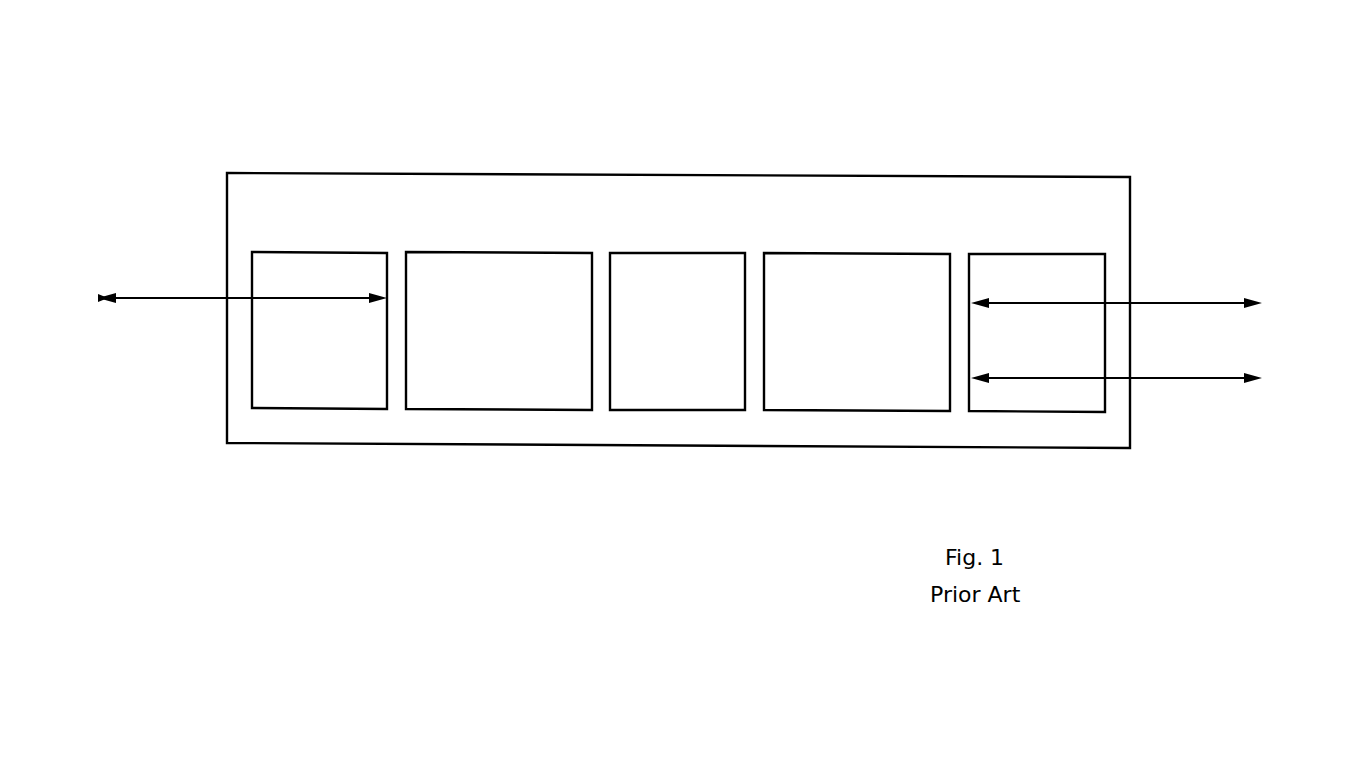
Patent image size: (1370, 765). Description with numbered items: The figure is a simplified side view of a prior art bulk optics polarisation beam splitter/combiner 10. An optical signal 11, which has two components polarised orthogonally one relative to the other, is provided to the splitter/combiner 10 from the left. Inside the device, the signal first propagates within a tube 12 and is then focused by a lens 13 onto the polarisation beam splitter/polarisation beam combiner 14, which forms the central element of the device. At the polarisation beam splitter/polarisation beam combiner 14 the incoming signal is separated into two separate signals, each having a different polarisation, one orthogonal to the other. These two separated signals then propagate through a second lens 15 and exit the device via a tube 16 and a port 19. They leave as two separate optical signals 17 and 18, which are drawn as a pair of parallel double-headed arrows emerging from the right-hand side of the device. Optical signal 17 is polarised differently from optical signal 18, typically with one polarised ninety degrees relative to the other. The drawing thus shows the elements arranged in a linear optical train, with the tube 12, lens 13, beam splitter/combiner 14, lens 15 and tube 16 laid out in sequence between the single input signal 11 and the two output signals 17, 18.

The splitter/combiner 10 is at (1064, 176).
The optical signal 11 is at (126, 298).
The tube 12 is at (348, 263).
The lens 13 is at (531, 265).
The polarisation beam splitter/polarisation beam combiner 14 is at (733, 265).
The lens 15 is at (917, 265).
The tube 16 is at (1082, 265).
The optical signal 17 is at (1223, 305).
The optical signal 18 is at (1223, 380).
The port 19 is at (1106, 268).